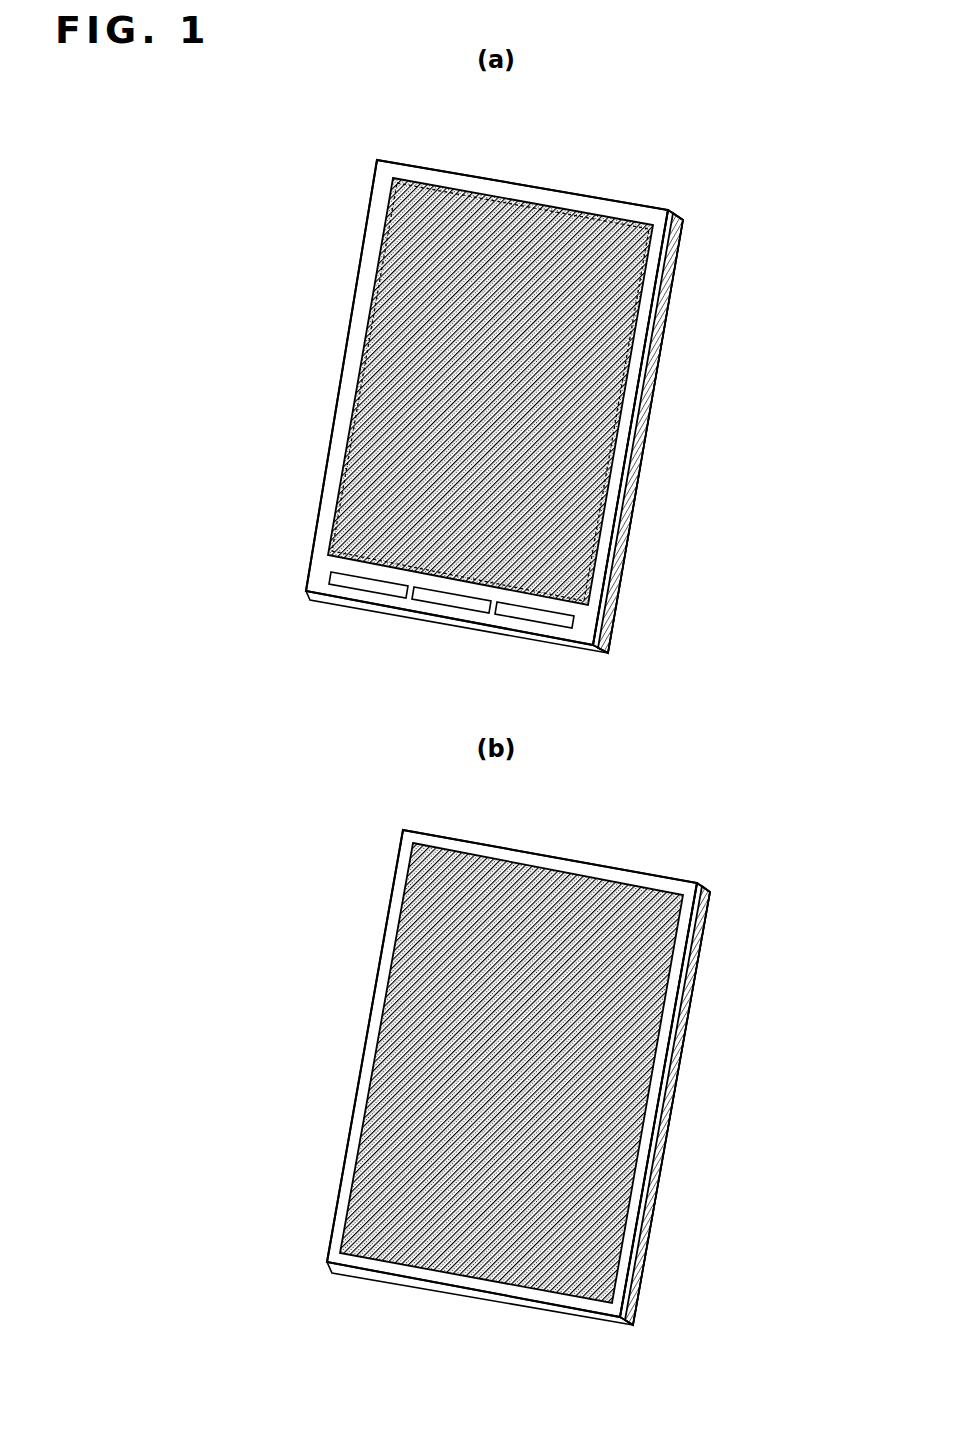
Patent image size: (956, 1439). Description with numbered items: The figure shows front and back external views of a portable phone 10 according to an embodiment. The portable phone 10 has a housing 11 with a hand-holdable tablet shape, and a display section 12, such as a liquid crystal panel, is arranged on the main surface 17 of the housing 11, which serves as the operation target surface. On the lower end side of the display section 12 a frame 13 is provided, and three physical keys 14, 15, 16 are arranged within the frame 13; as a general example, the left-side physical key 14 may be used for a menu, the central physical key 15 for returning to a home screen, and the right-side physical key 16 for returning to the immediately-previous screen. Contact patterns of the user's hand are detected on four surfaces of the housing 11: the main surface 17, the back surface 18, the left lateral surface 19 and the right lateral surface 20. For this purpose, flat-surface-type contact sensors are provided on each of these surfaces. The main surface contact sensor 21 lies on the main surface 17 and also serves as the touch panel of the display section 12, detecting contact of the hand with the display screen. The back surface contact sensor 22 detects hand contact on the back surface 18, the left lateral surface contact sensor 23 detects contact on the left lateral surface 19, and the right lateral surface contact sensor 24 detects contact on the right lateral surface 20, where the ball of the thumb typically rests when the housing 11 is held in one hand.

The portable phone 10 is at (724, 210).
The housing 11 is at (470, 171).
The display section 12 is at (623, 211).
The frame 13 is at (389, 629).
The physical key 14 is at (368, 594).
The physical key 15 is at (448, 611).
The physical key 16 is at (530, 626).
The main surface 17 is at (370, 253).
The back surface 18 is at (397, 921).
The left lateral surface 19 is at (688, 1003).
The right lateral surface 20 is at (672, 309).
The main surface contact sensor 21 is at (557, 203).
The back surface contact sensor 22 is at (587, 869).
The left lateral surface contact sensor 23 is at (682, 1068).
The right lateral surface contact sensor 24 is at (652, 398).